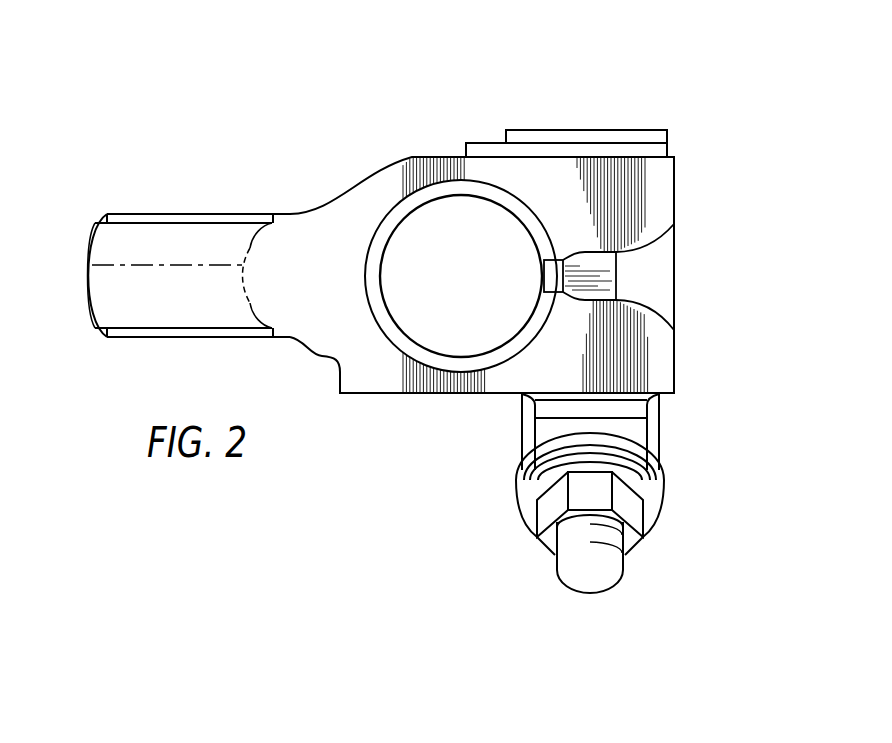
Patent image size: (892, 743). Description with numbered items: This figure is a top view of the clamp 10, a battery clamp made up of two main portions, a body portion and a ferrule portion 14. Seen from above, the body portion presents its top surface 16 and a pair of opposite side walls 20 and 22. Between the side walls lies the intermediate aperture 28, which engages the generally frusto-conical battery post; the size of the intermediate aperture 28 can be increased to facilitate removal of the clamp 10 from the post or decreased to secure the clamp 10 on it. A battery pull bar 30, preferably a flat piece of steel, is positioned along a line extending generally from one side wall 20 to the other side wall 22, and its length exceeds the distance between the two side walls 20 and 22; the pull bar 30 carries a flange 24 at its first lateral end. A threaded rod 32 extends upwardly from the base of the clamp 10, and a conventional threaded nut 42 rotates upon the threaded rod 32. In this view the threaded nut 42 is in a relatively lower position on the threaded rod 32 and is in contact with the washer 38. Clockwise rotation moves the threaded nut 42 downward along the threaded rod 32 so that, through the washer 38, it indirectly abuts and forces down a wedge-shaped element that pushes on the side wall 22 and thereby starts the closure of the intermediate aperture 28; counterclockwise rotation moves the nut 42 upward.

The clamp 10 is at (160, 104).
The ferrule portion 14 is at (138, 214).
The top surface 16 is at (346, 325).
The side wall 20 is at (481, 143).
The side wall 22 is at (369, 393).
The flange 24 is at (575, 130).
The intermediate aperture 28 is at (430, 254).
The battery pull bar 30 is at (600, 281).
The threaded rod 32 is at (605, 572).
The washer 38 is at (519, 487).
The threaded nut 42 is at (635, 506).